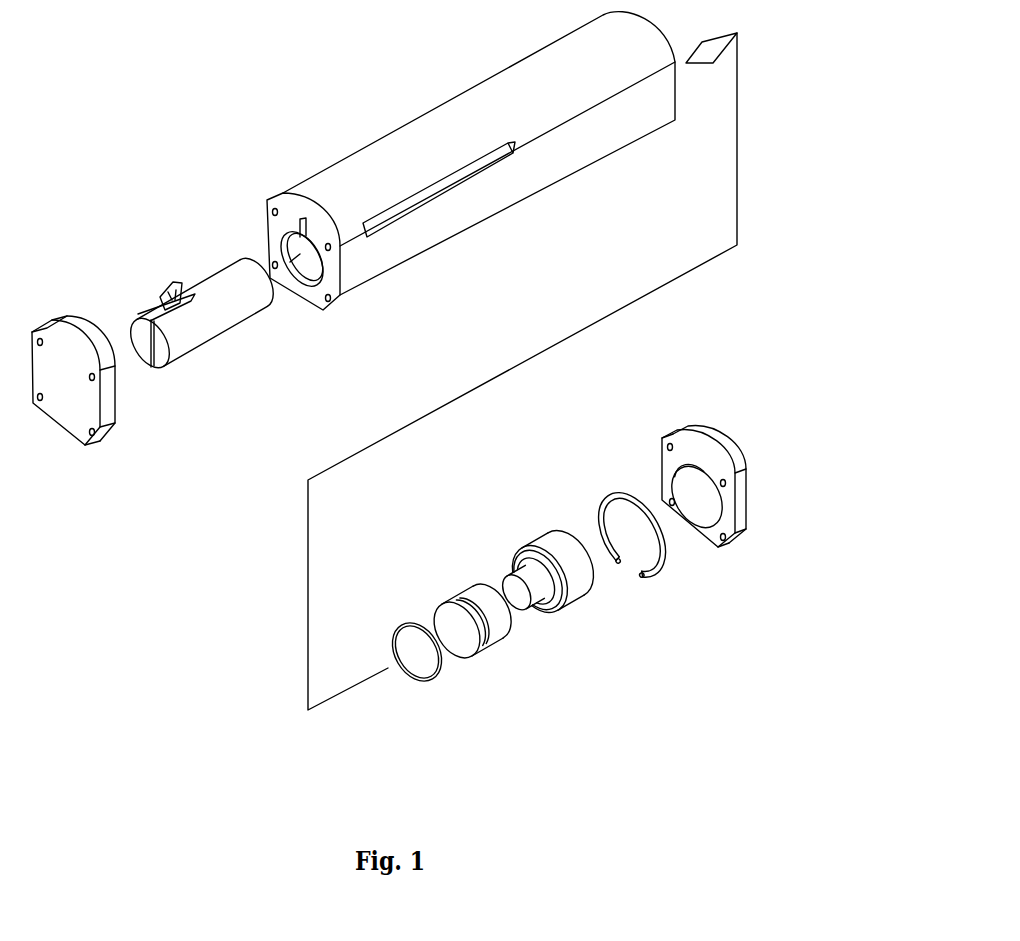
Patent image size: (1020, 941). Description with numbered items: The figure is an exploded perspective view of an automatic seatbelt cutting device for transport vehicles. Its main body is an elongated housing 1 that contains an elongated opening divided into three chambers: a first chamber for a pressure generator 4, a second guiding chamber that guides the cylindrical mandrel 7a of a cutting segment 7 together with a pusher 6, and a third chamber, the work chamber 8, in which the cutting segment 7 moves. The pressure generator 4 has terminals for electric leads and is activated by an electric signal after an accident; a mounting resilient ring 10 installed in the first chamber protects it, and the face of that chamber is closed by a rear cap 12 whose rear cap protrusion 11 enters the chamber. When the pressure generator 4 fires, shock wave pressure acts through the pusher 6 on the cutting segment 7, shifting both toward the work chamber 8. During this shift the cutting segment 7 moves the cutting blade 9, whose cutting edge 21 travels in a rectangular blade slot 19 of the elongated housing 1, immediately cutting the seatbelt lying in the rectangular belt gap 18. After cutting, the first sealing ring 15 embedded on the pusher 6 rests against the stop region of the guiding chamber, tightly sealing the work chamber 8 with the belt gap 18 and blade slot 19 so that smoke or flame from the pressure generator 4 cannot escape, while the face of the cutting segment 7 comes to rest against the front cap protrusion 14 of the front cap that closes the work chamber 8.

The elongated housing 1 is at (358, 173).
The rectangular belt gap 18 is at (463, 175).
The work chamber 8 is at (263, 198).
The rectangular blade slot 19 is at (300, 218).
The front cap protrusion 14 is at (62, 363).
The cutting segment 7 is at (195, 257).
The cylindrical mandrel 7a is at (212, 303).
The cutting blade 9 is at (168, 293).
The cutting edge 21 is at (160, 297).
The first sealing ring 15 is at (433, 682).
The pusher 6 is at (497, 620).
The pressure generator 4 is at (575, 577).
The mounting resilient ring 10 is at (642, 576).
The rear cap protrusion 11 is at (697, 497).
The rear cap 12 is at (716, 538).